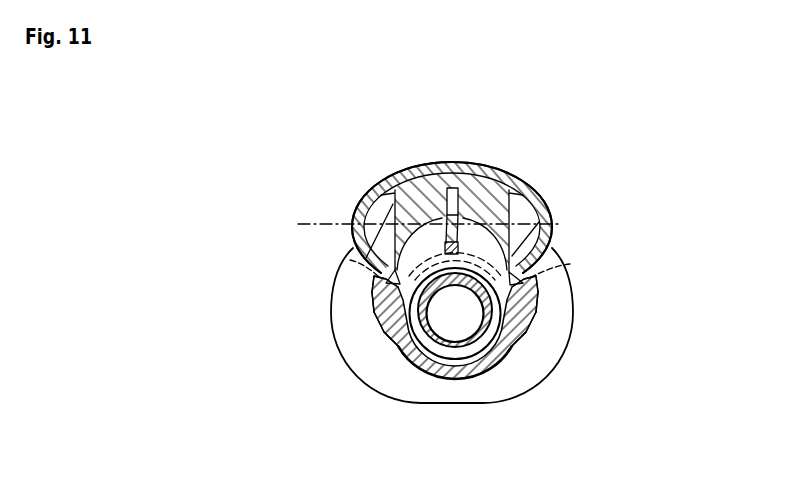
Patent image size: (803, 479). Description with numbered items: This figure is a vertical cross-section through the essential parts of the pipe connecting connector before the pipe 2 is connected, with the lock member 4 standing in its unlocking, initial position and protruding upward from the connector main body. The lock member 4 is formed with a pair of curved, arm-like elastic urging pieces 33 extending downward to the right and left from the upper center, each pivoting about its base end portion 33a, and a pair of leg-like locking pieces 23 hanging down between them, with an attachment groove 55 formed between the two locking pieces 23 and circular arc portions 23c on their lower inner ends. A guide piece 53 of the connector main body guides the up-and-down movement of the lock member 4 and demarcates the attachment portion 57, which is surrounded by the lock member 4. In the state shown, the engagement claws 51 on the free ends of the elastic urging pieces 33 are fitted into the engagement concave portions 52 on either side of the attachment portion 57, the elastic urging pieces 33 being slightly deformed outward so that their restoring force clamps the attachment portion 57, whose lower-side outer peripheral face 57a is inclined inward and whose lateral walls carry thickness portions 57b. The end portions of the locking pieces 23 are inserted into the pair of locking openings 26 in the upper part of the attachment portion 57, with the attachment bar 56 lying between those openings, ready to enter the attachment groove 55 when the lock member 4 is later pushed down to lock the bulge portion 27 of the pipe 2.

The pipe 2 is at (514, 396).
The lock member 4 is at (567, 114).
The locking piece 23 is at (392, 192).
The circular arc portion 23c is at (612, 226).
The locking opening 26 is at (393, 346).
The bulge portion 27 is at (465, 356).
The elastic urging piece 33 is at (343, 201).
The base end portion 33a is at (379, 188).
The engagement claw 51 is at (374, 300).
The engagement concave portion 52 is at (350, 261).
The guide piece 53 is at (557, 343).
The attachment groove 55 is at (473, 195).
The attachment bar 56 is at (418, 186).
The attachment portion 57 is at (426, 386).
The lower-side outer peripheral face 57a is at (383, 332).
The thickness portion 57b is at (374, 312).